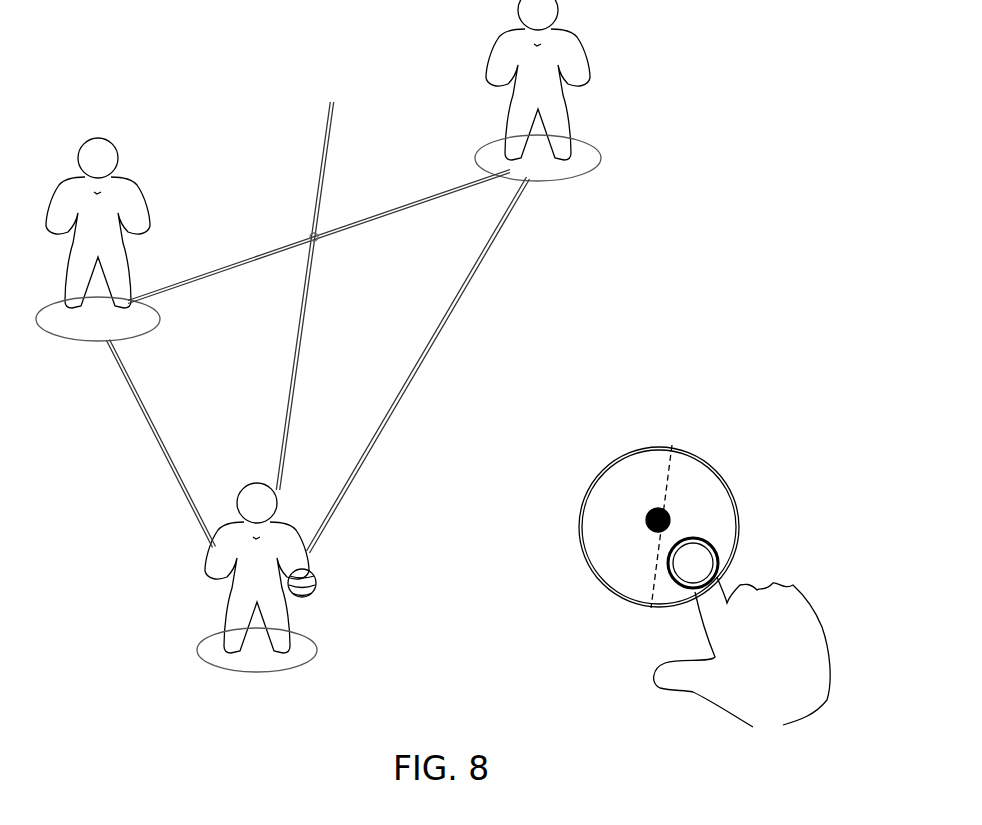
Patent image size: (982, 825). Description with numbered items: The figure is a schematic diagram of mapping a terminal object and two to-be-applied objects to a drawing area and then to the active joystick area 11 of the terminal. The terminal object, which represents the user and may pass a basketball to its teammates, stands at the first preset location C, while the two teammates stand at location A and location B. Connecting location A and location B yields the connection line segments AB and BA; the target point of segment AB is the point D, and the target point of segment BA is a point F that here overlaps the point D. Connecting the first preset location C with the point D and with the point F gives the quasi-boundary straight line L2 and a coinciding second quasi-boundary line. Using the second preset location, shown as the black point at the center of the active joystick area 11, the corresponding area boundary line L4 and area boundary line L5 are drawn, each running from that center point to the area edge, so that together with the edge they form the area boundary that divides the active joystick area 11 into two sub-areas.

The active joystick area 11 is at (722, 480).
The location A is at (98, 239).
The location B is at (538, 90).
The first preset location C is at (257, 577).
The quasi-boundary straight line L2 is at (344, 296).
The point D is at (278, 221).
The area boundary line L4 is at (650, 526).
The area boundary line L5 is at (663, 563).